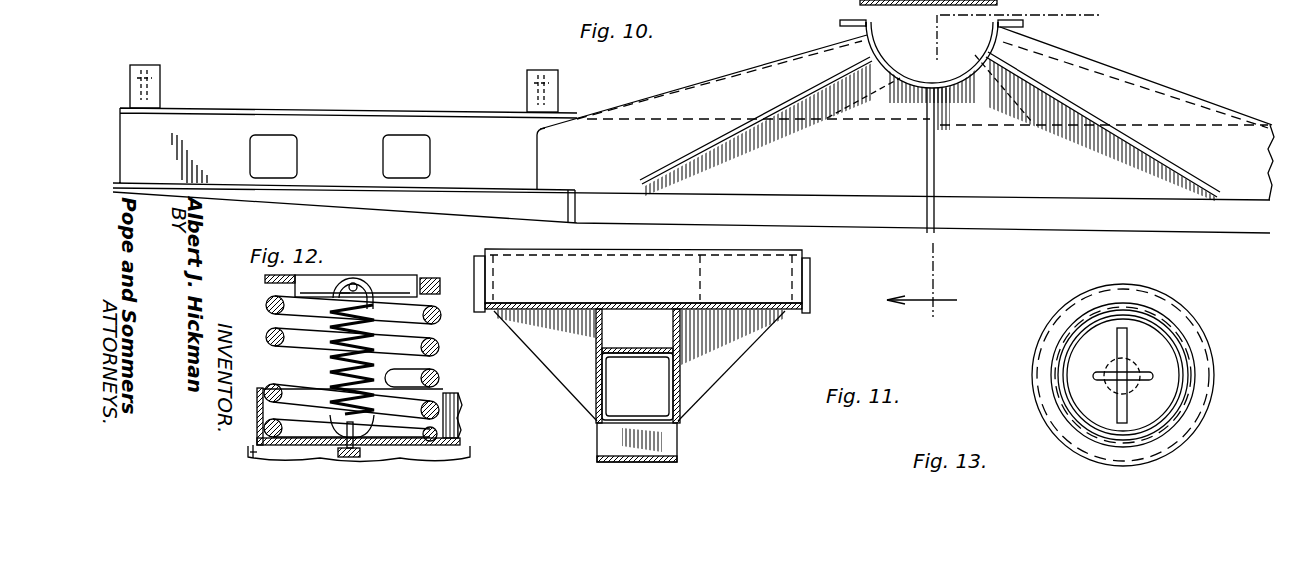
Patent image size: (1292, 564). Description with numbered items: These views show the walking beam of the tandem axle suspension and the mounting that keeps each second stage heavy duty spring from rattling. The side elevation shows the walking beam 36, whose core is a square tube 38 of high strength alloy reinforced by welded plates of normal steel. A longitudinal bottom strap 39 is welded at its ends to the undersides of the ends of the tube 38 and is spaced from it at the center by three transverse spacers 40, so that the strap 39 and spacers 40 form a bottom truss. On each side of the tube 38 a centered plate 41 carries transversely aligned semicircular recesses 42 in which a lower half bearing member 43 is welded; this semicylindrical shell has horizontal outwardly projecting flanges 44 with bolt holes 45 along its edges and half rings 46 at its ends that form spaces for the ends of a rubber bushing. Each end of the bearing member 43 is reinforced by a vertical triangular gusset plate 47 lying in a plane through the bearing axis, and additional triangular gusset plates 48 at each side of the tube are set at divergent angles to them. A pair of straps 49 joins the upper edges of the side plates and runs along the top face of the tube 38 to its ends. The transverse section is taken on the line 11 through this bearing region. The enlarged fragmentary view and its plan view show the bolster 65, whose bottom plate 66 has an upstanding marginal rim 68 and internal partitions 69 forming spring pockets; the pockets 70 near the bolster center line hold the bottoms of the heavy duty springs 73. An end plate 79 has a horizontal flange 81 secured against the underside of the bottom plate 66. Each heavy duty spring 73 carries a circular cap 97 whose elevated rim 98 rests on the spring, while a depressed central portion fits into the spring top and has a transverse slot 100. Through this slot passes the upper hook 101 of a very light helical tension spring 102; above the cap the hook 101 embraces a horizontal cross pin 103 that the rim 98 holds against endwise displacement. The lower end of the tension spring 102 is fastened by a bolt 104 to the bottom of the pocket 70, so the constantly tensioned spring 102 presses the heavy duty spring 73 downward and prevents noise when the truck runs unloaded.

In FIG. 10, the section line 11 is at (1007, 166).
In FIG. 10, the walking beam 36 is at (215, 133).
In FIG. 10, the square tube 38 is at (350, 126).
In FIG. 11, the square tube 38 is at (631, 357).
In FIG. 10, the longitudinal bottom strap 39 is at (1127, 232).
In FIG. 11, the longitudinal bottom strap 39 is at (605, 453).
In FIG. 10, the transverse spacers 40 is at (577, 210).
In FIG. 11, the transverse spacers 40 is at (672, 437).
In FIG. 11, the plate 41 is at (673, 330).
In FIG. 10, the semicircular recesses 42 is at (965, 75).
In FIG. 11, the semicircular recesses 42 is at (618, 305).
In FIG. 10, the lower half bearing member 43 is at (912, 74).
In FIG. 11, the lower half bearing member 43 is at (565, 303).
In FIG. 10, the flanges 44 is at (843, 22).
In FIG. 11, the flanges 44 is at (703, 257).
In FIG. 10, the bolt holes 45 is at (972, 4).
In FIG. 11, the bolt holes 45 is at (637, 255).
In FIG. 10, the half rings 46 is at (1012, 58).
In FIG. 11, the half rings 46 is at (810, 262).
In FIG. 10, the triangular reinforcing gusset plate 47 is at (770, 105).
In FIG. 11, the triangular reinforcing gusset plate 47 is at (580, 398).
In FIG. 11, the additional triangular gusset plates 48 is at (717, 385).
In FIG. 10, the straps 49 is at (640, 98).
In FIG. 12, the bolster 65 is at (255, 420).
In FIG. 12, the bottom plate 66 is at (462, 434).
In FIG. 12, the marginal rim 68 is at (259, 387).
In FIG. 12, the internal partitions 69 is at (460, 418).
In FIG. 12, the pockets 70 is at (440, 395).
In FIG. 12, the heavy duty spring 73 is at (443, 346).
In FIG. 13, the heavy duty spring 73 is at (1192, 433).
In FIG. 12, the end plate 79 is at (257, 452).
In FIG. 12, the horizontal flange 81 is at (463, 456).
In FIG. 12, the circular cap 97 is at (437, 286).
In FIG. 13, the circular cap 97 is at (1097, 287).
In FIG. 12, the elevated rim 98 is at (437, 277).
In FIG. 13, the elevated rim 98 is at (1177, 310).
In FIG. 12, the transverse slot 100 is at (340, 298).
In FIG. 12, the upper hook 101 is at (346, 287).
In FIG. 13, the upper hook 101 is at (1137, 370).
In FIG. 12, the helical tension spring 102 is at (332, 357).
In FIG. 13, the helical tension spring 102 is at (1108, 385).
In FIG. 12, the horizontal cross pin 103 is at (368, 285).
In FIG. 13, the horizontal cross pin 103 is at (1118, 338).
In FIG. 12, the bolt 104 is at (332, 428).